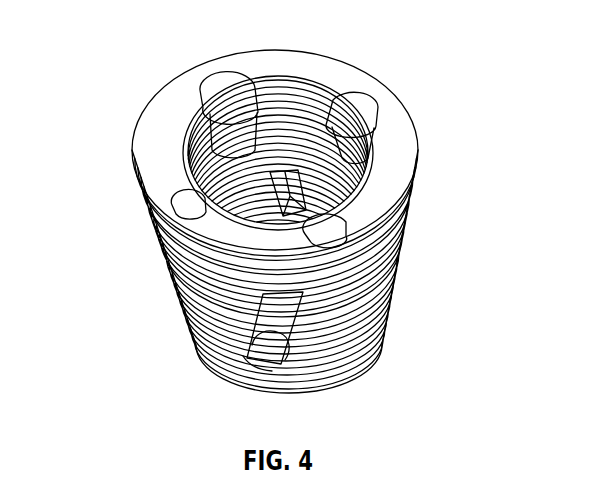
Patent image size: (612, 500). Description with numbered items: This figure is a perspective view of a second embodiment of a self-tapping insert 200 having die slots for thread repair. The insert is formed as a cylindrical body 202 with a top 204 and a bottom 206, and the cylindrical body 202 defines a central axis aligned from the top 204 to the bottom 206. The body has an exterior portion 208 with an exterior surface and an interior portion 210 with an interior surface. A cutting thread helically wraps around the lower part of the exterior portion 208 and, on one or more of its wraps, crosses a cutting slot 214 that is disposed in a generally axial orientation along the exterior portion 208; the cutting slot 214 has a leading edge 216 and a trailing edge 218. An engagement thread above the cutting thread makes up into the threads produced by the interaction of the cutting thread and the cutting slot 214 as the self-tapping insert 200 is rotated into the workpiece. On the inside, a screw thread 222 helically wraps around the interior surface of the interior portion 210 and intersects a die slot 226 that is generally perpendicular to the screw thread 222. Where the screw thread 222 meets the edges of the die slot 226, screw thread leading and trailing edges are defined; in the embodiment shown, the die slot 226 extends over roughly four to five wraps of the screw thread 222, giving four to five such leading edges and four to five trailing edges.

The self-tapping insert 200 is at (416, 238).
The cylindrical body 202 is at (413, 127).
The top 204 is at (153, 108).
The bottom 206 is at (205, 366).
The exterior portion 208 is at (376, 314).
The interior portion 210 is at (290, 128).
The cutting slot 214 is at (278, 344).
The leading edge 216 is at (247, 360).
The trailing edge 218 is at (278, 364).
The screw thread 222 is at (298, 90).
The die slot 226 is at (213, 88).